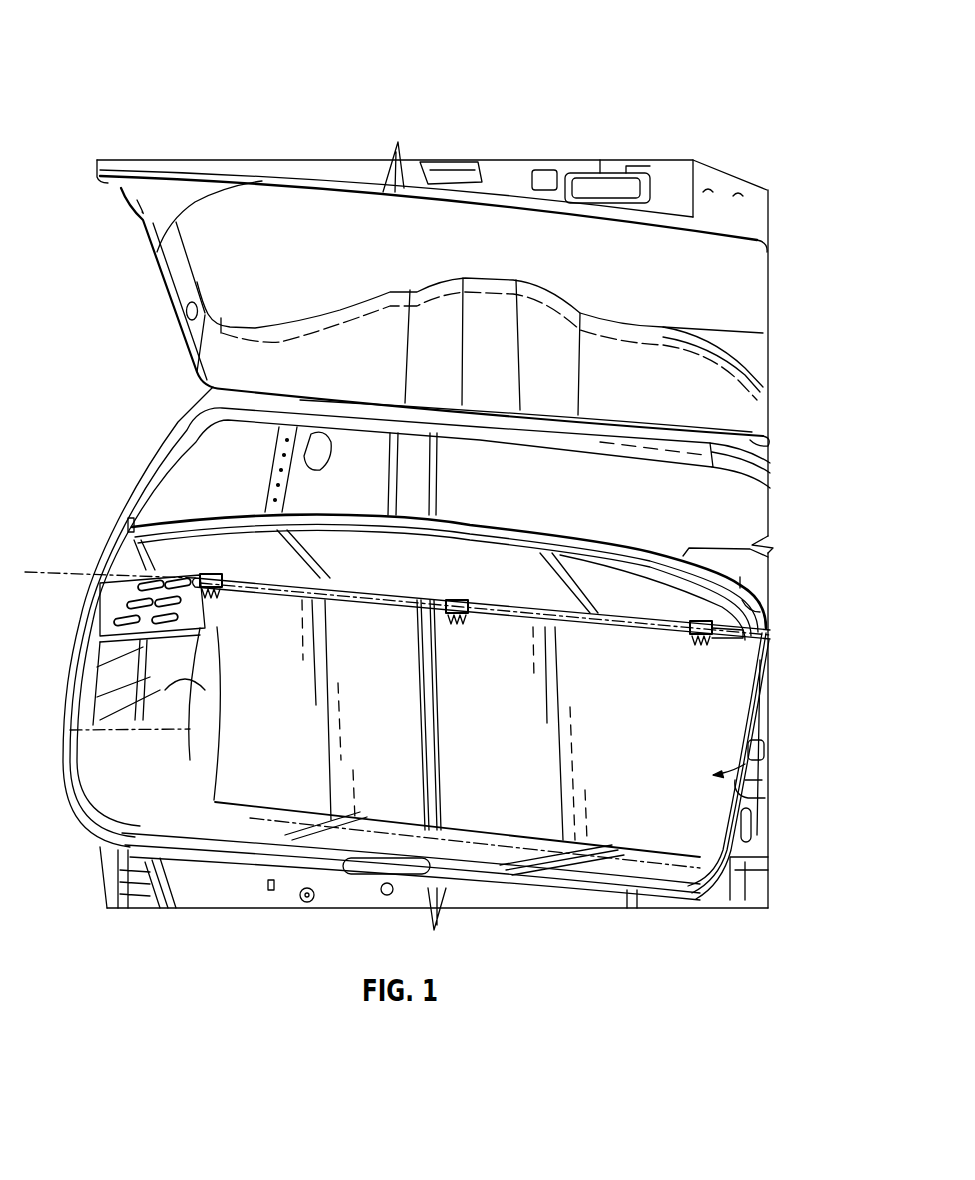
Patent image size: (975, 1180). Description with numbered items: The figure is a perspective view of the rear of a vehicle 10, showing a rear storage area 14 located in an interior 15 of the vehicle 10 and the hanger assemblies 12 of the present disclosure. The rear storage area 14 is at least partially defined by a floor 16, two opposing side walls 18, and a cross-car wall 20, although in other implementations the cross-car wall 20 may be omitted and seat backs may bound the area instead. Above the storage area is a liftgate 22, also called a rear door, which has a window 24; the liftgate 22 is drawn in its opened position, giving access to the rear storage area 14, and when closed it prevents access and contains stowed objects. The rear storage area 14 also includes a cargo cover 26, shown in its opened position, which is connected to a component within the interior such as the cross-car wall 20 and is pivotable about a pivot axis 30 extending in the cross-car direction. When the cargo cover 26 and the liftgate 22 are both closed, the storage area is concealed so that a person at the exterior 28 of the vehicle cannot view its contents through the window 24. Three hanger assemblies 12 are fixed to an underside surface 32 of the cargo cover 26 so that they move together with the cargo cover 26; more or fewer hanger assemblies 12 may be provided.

The vehicle 10 is at (81, 36).
The hanger assembly 12 is at (224, 606).
The rear storage area 14 is at (752, 743).
The interior 15 is at (752, 520).
The floor 16 is at (238, 798).
The side wall 18 is at (748, 788).
The cross-car wall 20 is at (730, 718).
The liftgate 22 is at (138, 206).
The window 24 is at (235, 218).
The cargo cover 26 is at (147, 525).
The exterior 28 is at (65, 414).
The pivot axis 30 is at (62, 572).
The underside surface 32 is at (740, 612).